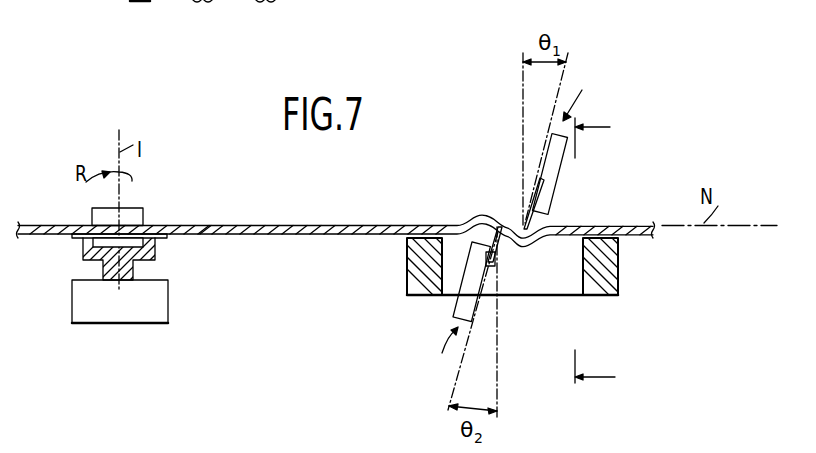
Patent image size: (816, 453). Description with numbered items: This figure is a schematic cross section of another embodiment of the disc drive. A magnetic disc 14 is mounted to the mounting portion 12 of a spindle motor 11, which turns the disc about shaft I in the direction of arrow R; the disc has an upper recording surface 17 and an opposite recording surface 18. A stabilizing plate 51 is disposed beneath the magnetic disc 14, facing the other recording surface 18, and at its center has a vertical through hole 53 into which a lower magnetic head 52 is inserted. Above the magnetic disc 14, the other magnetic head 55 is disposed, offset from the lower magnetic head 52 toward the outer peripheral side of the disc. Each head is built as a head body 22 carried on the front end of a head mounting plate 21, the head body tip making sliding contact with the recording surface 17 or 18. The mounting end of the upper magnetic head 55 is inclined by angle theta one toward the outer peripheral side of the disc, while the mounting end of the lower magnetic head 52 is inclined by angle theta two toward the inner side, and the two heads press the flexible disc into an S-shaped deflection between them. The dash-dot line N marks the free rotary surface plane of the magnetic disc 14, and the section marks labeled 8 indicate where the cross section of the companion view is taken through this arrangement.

The section line 8- 8 is at (606, 252).
The spindle motor 11 is at (153, 310).
The mounting portion 12 is at (153, 257).
The magnetic disc 14 is at (608, 223).
The recording surface 17 is at (277, 223).
The other recording surface 18 is at (322, 231).
The head mounting plate 21 is at (550, 183).
The head body 22 is at (532, 195).
The stabilizing plate 51 is at (620, 280).
The magnetic head 52 is at (438, 342).
The vertical through hole 53 is at (573, 285).
The other magnetic head 55 is at (581, 98).